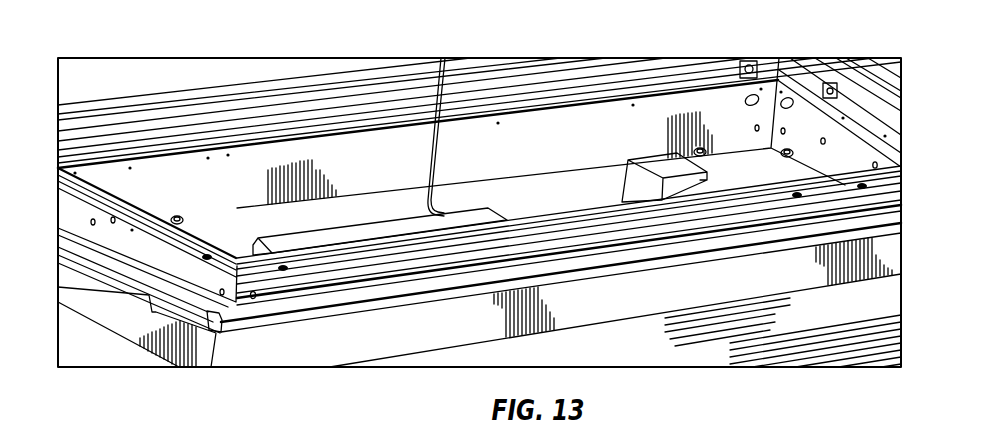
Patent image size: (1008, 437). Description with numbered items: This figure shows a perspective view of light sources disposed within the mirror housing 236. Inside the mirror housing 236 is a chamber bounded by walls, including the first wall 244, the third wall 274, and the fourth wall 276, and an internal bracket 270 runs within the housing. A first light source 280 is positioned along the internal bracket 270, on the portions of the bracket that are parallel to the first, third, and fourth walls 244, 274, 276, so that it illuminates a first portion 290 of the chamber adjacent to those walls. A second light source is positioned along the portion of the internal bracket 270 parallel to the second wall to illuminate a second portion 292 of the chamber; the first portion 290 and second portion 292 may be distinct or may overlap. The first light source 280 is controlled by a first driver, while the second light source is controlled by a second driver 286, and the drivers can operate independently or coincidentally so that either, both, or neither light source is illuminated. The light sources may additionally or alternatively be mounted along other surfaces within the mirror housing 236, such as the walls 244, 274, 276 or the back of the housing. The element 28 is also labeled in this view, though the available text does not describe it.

The tray assembly 28 is at (112, 87).
The rail 292 is at (188, 137).
The flange 276 is at (283, 110).
The side wall 270 is at (618, 128).
The box 286 is at (708, 177).
The rail 280 is at (185, 242).
The bracket 290 is at (117, 245).
The panel 244 is at (135, 327).
The bottom flange 274 is at (603, 313).
The side panel 236 is at (782, 275).